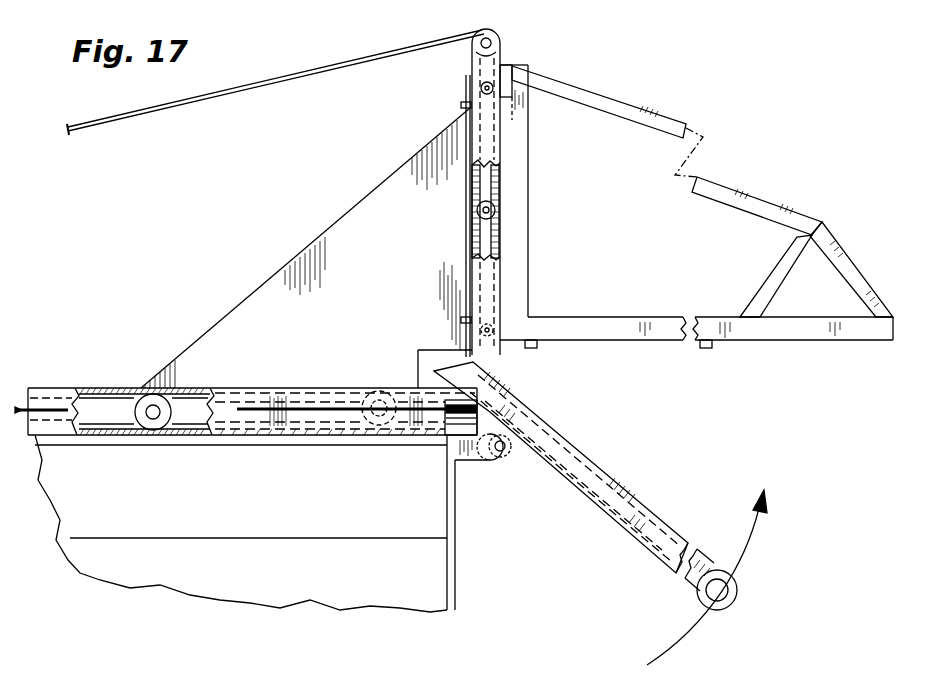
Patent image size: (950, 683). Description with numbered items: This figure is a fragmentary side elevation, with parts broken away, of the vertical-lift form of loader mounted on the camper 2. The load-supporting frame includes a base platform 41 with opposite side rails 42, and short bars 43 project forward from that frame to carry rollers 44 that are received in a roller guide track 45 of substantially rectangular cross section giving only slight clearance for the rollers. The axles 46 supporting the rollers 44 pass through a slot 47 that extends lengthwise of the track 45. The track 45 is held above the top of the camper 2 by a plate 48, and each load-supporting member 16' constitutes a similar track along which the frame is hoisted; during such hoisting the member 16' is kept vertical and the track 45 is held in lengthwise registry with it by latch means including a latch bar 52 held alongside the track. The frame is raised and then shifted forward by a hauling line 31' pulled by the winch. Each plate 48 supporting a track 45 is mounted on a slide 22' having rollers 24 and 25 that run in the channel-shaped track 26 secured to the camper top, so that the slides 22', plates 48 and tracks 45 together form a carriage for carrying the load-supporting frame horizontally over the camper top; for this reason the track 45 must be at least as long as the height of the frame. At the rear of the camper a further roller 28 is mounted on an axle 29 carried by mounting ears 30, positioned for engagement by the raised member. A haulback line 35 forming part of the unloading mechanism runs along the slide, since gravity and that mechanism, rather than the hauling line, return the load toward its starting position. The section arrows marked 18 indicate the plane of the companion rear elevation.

The camper 2 is at (318, 592).
The load-supporting member 16' is at (600, 513).
The section line 18 is at (528, 60).
The slide 22' is at (252, 392).
The roller 24 is at (380, 437).
The roller 25 is at (157, 430).
The channel-shaped track 26 is at (125, 388).
The roller 28 is at (505, 447).
The axle 29 is at (505, 450).
The mounting ear 30 is at (470, 460).
The hauling line 31' is at (275, 82).
The haulback line 35 is at (43, 407).
The base platform 41 is at (620, 330).
The side rail 42 is at (641, 118).
The short bar 43 is at (508, 76).
The roller 44 is at (488, 206).
The roller guide track 45 is at (466, 110).
The axle 46 is at (476, 212).
The slot 47 is at (487, 237).
The plate 48 is at (381, 184).
The latch bar 52 is at (465, 254).